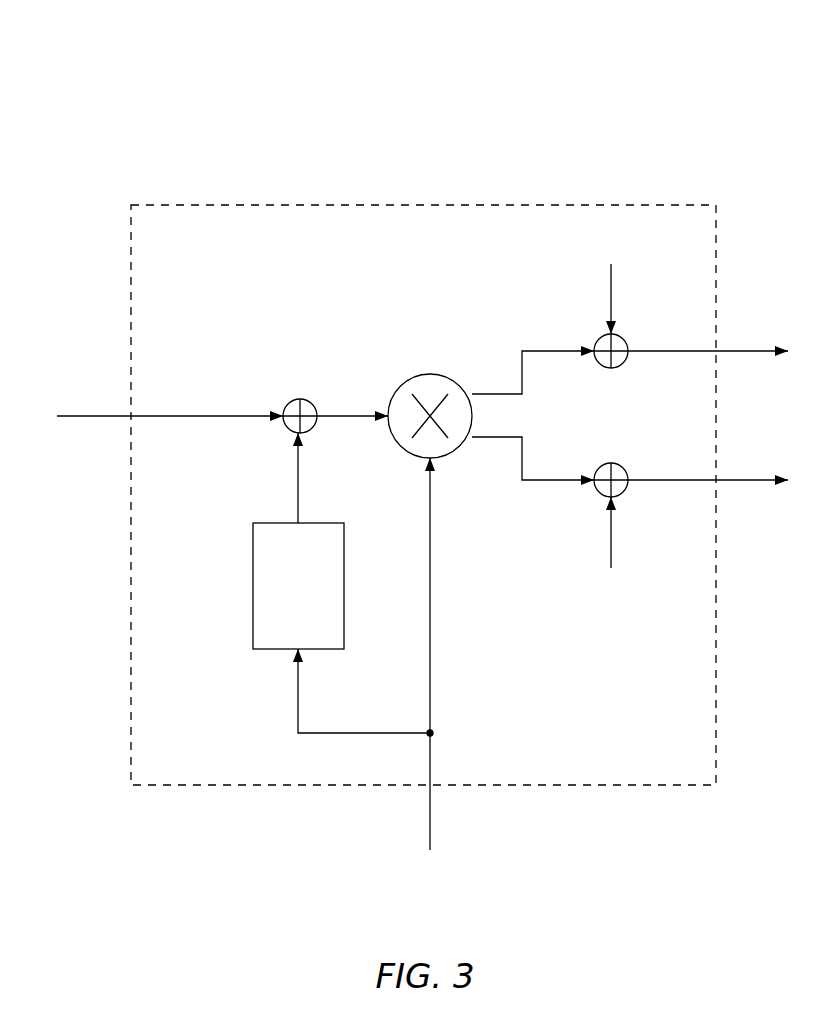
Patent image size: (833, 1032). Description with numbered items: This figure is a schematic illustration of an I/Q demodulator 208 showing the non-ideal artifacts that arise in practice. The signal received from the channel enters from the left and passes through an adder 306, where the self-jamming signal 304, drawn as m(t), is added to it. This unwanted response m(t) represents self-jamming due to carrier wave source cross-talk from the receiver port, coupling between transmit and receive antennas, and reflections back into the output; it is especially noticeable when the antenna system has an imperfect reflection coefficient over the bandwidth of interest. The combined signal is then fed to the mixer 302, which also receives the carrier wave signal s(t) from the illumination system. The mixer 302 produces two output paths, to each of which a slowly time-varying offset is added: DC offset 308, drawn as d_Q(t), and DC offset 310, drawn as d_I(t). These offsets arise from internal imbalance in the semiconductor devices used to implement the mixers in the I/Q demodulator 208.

The I/Q demodulator 208 is at (725, 98).
The mixer 302 is at (430, 372).
The self-jamming signal 304 is at (253, 587).
The adder 306 is at (298, 396).
The DC offset 308 is at (641, 203).
The DC offset 310 is at (610, 617).